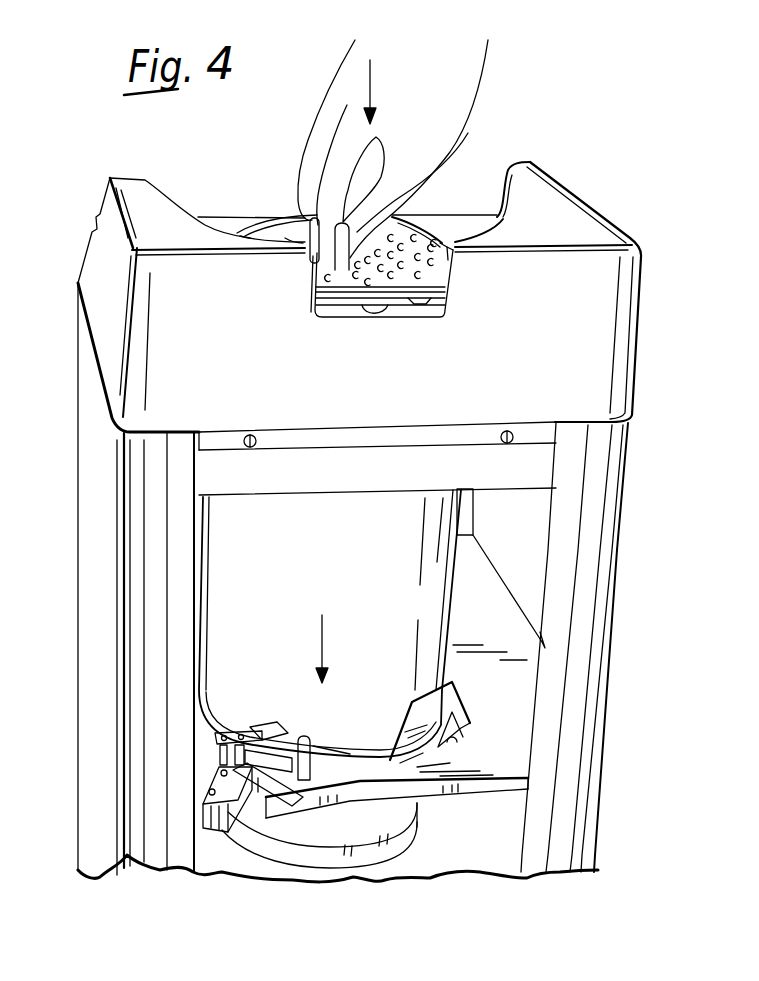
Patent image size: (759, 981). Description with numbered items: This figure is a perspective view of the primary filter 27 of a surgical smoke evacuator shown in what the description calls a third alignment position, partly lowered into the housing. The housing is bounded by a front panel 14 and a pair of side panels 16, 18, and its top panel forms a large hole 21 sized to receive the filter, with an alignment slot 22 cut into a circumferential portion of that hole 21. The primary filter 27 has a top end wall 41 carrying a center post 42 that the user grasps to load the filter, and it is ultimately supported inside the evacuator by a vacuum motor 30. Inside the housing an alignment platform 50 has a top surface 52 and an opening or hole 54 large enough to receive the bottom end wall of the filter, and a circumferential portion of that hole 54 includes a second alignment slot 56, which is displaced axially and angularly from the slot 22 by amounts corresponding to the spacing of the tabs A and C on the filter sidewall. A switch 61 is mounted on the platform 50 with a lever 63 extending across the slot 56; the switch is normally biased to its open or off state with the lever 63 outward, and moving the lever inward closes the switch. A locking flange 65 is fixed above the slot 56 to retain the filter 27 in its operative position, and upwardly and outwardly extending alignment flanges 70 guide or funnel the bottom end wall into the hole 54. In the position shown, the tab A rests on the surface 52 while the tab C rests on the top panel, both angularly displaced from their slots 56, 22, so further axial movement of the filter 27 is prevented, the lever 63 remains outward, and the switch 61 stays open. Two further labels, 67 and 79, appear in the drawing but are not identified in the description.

The front panel 14 is at (470, 517).
The side panel 16 is at (103, 487).
The side panel 18 is at (532, 533).
The hole 21 is at (273, 225).
The alignment slot 22 is at (372, 315).
The primary filter 27 is at (227, 527).
The vacuum motor 30 is at (417, 827).
The top end wall 41 is at (303, 240).
The center post 42 is at (398, 200).
The alignment platform 50 is at (508, 686).
The top surface 52 is at (472, 632).
The hole 54 is at (427, 713).
The alignment slot 56 is at (263, 728).
The switch 61 is at (210, 830).
The lever 63 is at (245, 808).
The locking flange 65 is at (273, 727).
The posts 67 is at (217, 760).
The alignment flange 70 is at (476, 222).
The top cover 79 is at (610, 308).
The tab A is at (316, 740).
The tab C is at (417, 323).